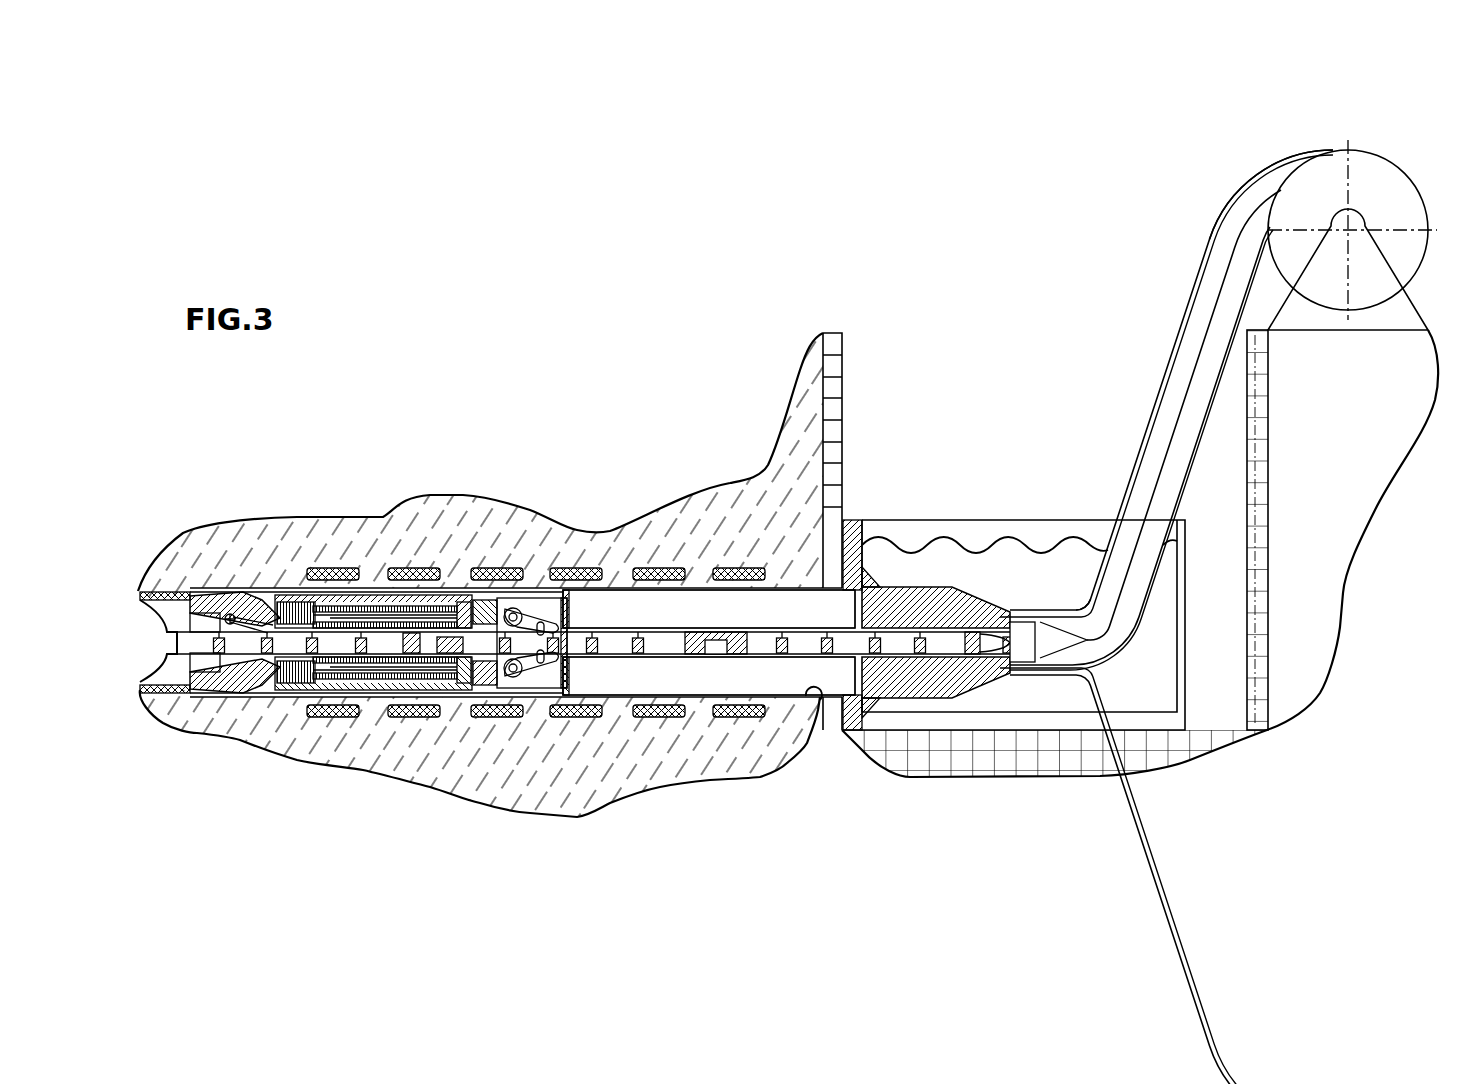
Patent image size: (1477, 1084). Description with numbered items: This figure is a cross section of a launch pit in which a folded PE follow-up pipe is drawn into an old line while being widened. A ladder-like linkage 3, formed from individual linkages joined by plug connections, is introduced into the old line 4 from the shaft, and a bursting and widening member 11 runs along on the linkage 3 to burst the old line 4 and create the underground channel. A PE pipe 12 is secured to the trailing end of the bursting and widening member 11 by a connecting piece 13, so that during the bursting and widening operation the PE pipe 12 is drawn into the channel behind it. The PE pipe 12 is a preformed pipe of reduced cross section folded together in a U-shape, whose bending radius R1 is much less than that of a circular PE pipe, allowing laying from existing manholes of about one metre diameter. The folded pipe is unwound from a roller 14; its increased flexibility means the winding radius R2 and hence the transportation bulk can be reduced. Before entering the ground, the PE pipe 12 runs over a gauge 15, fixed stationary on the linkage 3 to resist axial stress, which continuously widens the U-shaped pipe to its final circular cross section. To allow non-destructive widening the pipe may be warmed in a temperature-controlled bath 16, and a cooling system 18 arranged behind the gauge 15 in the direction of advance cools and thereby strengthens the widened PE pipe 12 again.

The linkage 3 is at (767, 642).
The old line 4 is at (190, 603).
The bursting and widening member 11 is at (237, 677).
The PE pipe 12 is at (1180, 333).
The connecting piece 13 is at (525, 588).
The roller 14 is at (1390, 195).
The gauge 15 is at (940, 670).
The temperature-controlled bath 16 is at (972, 560).
The cooling system 18 is at (760, 583).
The bending radius R1 is at (1085, 600).
The winding radius R2 is at (1395, 145).